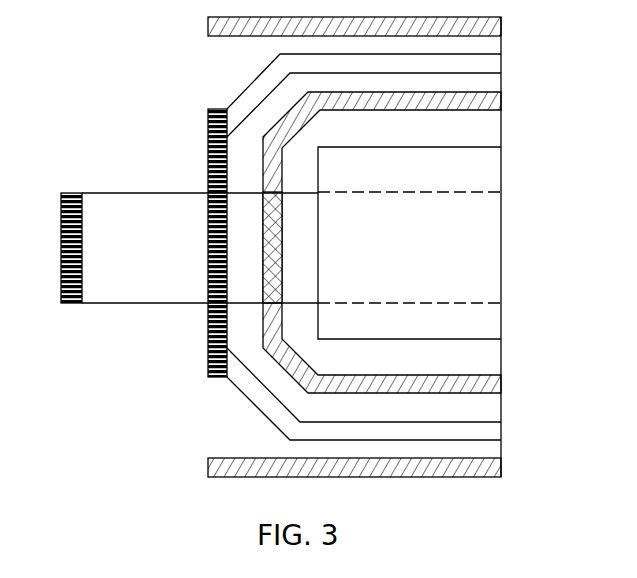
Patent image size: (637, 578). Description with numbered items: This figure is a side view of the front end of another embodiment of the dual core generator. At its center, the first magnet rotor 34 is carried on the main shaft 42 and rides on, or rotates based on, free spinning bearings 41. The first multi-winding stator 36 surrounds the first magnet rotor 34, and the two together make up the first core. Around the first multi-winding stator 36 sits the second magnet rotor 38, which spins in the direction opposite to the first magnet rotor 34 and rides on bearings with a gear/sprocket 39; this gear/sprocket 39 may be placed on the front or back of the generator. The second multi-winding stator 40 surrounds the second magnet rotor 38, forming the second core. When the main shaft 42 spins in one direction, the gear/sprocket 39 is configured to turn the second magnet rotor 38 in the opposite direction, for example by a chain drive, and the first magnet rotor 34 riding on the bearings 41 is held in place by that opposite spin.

The first magnet rotor 34 is at (372, 147).
The first multi-winding stator 36 is at (263, 165).
The second magnet rotor 38 is at (258, 78).
The gear/sprocket 39 is at (208, 114).
The second multi-winding stator 40 is at (263, 458).
The free spinning bearings 41 is at (263, 230).
The main shaft 42 is at (172, 193).